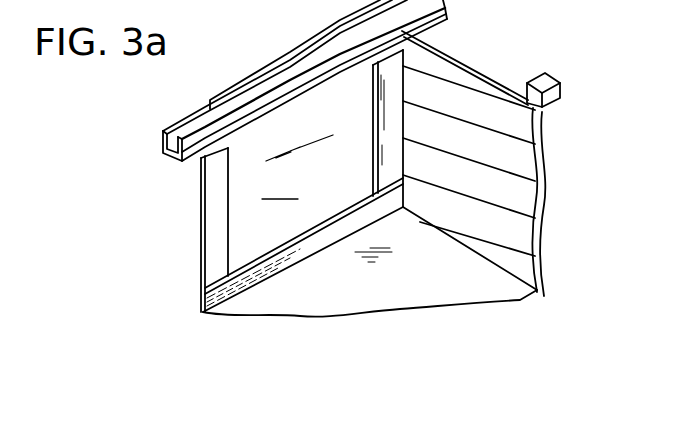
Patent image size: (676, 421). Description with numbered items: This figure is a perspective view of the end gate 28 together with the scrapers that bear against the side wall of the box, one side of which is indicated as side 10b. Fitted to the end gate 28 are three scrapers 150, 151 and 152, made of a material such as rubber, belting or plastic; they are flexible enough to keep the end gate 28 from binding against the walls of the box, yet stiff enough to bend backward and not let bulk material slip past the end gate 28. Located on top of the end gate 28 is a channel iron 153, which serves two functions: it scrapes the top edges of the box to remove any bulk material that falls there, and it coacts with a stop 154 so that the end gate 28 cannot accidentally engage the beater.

The side of the box 10b is at (467, 58).
The end gate 28 is at (297, 168).
The scraper 150 is at (303, 248).
The scraper 151 is at (213, 223).
The scraper 152 is at (387, 200).
The channel iron 153 is at (162, 141).
The stop 154 is at (560, 90).